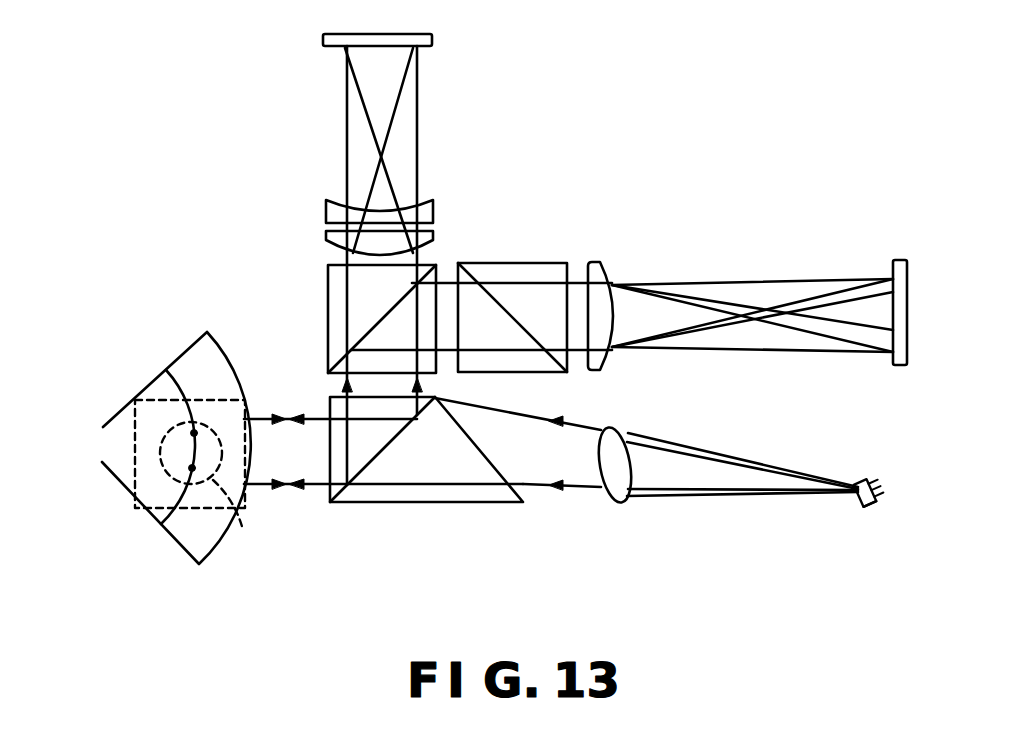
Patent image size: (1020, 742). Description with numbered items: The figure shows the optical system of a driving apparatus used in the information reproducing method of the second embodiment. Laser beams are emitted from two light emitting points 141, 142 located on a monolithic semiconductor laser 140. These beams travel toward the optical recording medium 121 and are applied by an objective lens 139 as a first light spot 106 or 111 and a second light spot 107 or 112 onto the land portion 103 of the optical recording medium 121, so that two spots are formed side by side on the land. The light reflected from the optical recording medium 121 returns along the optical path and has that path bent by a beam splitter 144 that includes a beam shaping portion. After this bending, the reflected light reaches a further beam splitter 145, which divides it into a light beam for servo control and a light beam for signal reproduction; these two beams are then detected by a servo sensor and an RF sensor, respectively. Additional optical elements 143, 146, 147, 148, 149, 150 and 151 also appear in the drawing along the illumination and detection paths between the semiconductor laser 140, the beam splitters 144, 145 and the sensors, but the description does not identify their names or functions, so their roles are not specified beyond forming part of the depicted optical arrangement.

The land portion 103 is at (182, 540).
The first light spot 106 is at (133, 380).
The first light spot 111 is at (194, 433).
The second light spot 107 is at (128, 522).
The second light spot 112 is at (192, 468).
The optical recording medium 121 is at (219, 540).
The objective lens 139 is at (243, 530).
The monolithic semiconductor laser 140 is at (876, 478).
The light emitting point 141 is at (857, 484).
The light emitting point 142 is at (858, 503).
The collimator lens 143 is at (626, 431).
The beam splitter with a beam shaping portion 144 is at (493, 503).
The beam splitter 145 is at (328, 283).
The convex lens 146 is at (326, 240).
The concave lens 147 is at (326, 212).
The reflecting mirror plate 148 is at (323, 42).
The second beam splitter cube 149 is at (513, 263).
The imaging lens 150 is at (590, 263).
The photodetector 151 is at (897, 260).